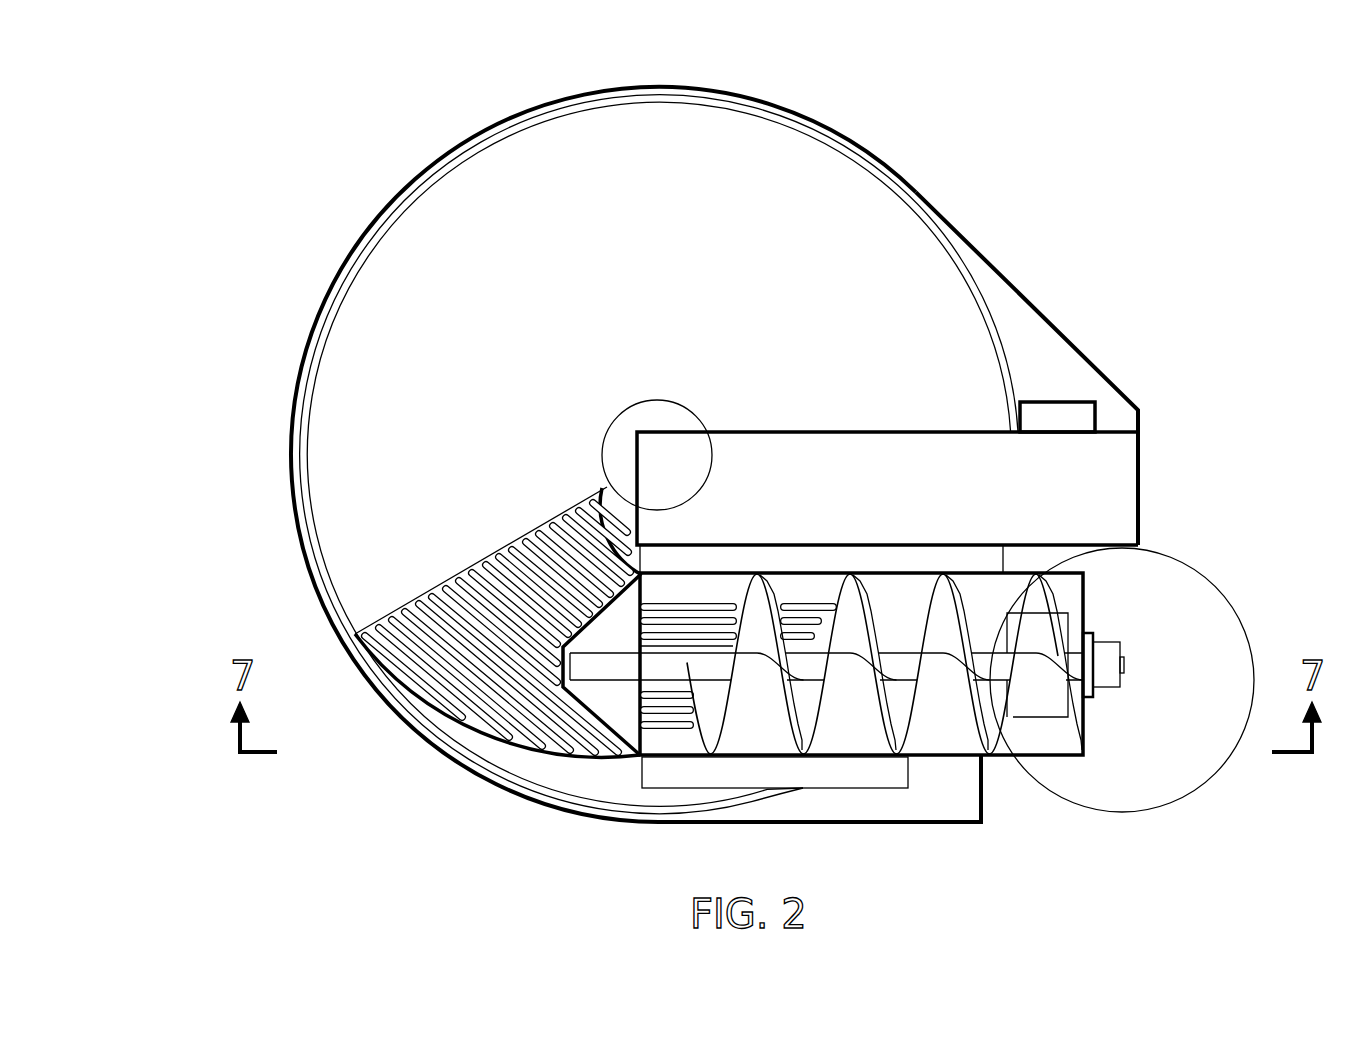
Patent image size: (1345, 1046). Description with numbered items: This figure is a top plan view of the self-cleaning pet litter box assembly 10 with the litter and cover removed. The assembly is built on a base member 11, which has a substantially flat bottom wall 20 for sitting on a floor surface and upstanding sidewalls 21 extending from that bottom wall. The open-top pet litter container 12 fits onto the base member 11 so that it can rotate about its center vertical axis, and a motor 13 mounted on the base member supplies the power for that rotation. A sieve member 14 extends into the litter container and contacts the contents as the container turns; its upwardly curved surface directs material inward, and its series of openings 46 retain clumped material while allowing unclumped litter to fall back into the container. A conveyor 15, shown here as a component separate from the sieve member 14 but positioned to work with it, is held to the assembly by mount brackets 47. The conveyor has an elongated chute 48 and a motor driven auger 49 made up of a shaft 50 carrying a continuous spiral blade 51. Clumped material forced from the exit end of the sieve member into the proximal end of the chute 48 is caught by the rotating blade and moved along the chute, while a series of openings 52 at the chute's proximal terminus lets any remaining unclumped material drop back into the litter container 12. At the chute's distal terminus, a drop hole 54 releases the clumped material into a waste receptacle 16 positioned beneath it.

The self-cleaning pet litter box assembly 10 is at (240, 492).
The base member 11 is at (869, 147).
The open-top pet litter container 12 is at (987, 323).
The motor 13 is at (1043, 408).
The sieve member 14 is at (440, 708).
The conveyor 15 is at (746, 742).
The waste receptacle 16 is at (1205, 582).
The flat bottom wall 20 is at (651, 302).
The upstanding sidewalls 21 is at (783, 126).
The openings 46 is at (515, 550).
The mount brackets 47 is at (888, 545).
The elongated chute 48 is at (948, 758).
The motor driven auger 49 is at (987, 655).
The shaft 50 is at (1083, 640).
The continuous spiral blade 51 is at (1040, 585).
The openings 52 is at (690, 605).
The drop hole 54 is at (1068, 707).